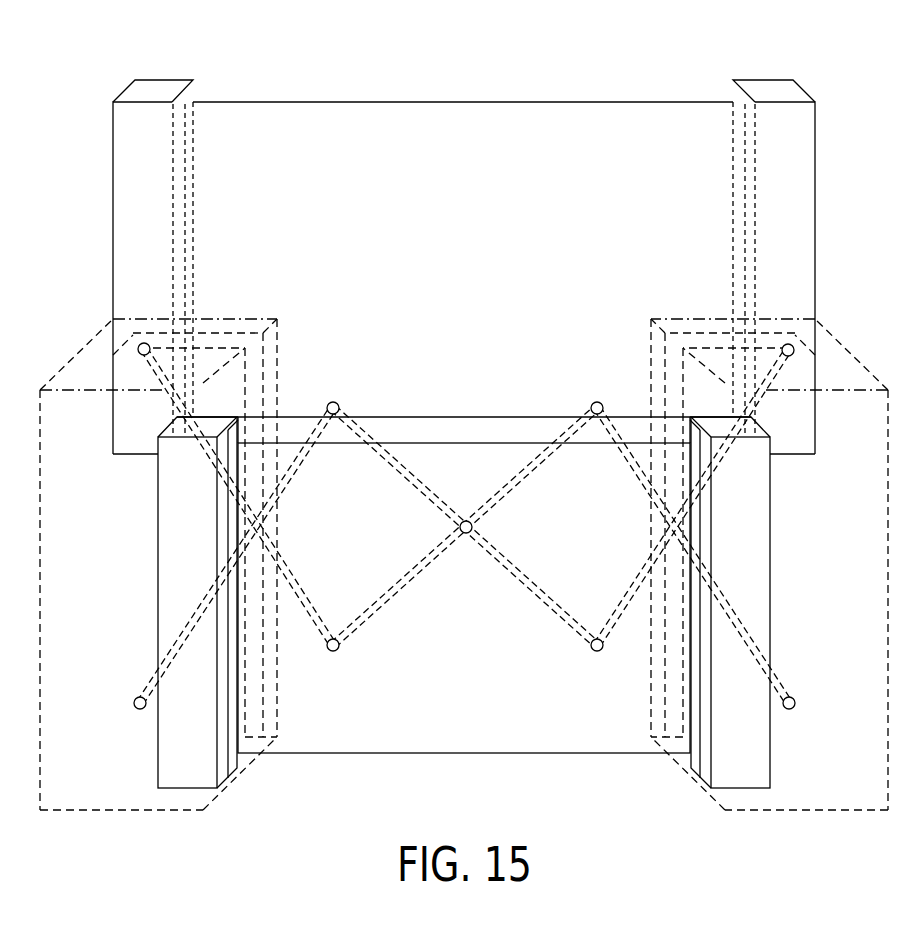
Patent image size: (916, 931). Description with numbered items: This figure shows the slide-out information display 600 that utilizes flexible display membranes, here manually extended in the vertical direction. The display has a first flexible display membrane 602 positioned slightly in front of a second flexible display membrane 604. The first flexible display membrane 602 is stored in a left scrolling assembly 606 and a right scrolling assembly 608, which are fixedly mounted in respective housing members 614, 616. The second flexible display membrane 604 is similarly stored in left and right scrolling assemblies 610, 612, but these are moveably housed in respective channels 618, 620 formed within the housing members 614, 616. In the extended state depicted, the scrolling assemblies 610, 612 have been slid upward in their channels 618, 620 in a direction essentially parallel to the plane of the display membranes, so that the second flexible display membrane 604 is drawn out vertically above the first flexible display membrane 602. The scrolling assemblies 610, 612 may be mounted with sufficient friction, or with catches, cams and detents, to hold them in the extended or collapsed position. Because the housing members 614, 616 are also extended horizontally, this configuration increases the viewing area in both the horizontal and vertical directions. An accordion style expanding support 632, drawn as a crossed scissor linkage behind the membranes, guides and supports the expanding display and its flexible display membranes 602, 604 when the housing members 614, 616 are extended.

The slide-out information display 600 is at (509, 85).
The first flexible display membrane 602 is at (405, 442).
The second flexible display membrane 604 is at (598, 101).
The left scrolling assembly 606 is at (210, 772).
The right scrolling assembly 608 is at (718, 772).
The left scrolling assembly 610 is at (125, 253).
The right scrolling assembly 612 is at (805, 253).
The housing member 614 is at (85, 362).
The housing member 616 is at (843, 362).
The channel 618 is at (193, 313).
The channel 620 is at (735, 313).
The expanding support 632 is at (450, 547).